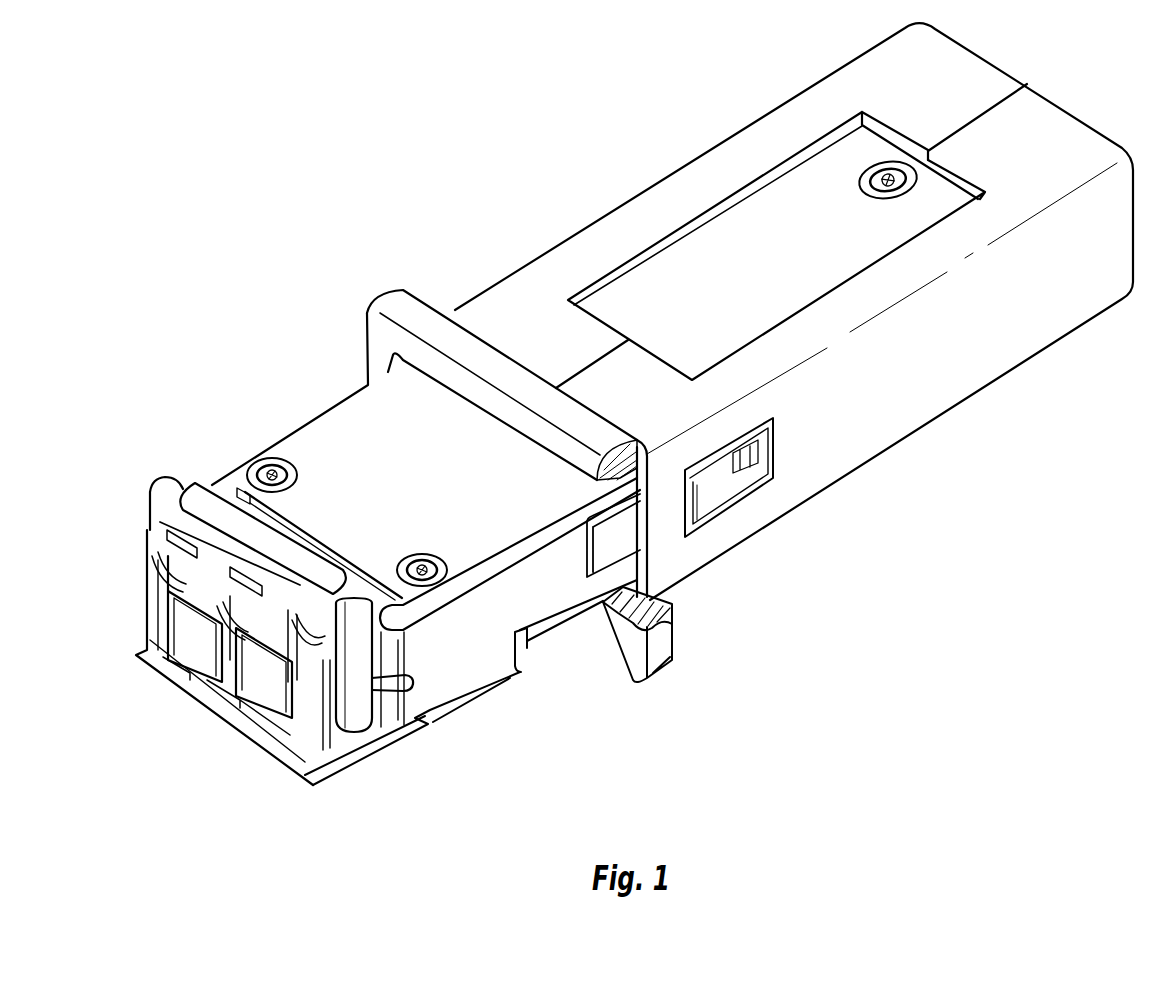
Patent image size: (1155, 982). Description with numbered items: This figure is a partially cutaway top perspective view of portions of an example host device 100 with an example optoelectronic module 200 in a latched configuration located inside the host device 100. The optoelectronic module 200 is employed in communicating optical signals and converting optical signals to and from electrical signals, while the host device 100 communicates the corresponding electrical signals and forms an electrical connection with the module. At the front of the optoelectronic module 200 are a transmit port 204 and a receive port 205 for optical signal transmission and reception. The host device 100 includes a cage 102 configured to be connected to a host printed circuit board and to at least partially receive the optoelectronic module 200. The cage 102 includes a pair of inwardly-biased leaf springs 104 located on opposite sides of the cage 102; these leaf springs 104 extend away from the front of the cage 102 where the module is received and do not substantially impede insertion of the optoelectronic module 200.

The host device 100 is at (282, 163).
The cage 102 is at (940, 360).
The leaf springs 104 is at (713, 483).
The optoelectronic module 200 is at (143, 595).
The transmit port 204 is at (202, 613).
The receive port 205 is at (263, 657).